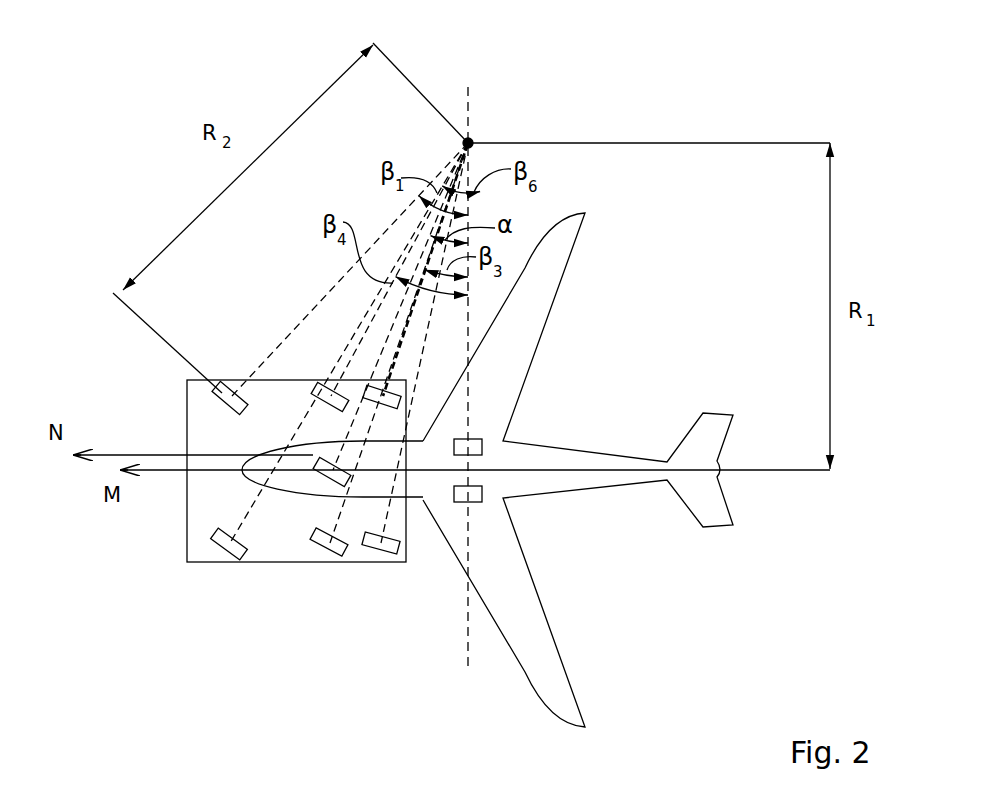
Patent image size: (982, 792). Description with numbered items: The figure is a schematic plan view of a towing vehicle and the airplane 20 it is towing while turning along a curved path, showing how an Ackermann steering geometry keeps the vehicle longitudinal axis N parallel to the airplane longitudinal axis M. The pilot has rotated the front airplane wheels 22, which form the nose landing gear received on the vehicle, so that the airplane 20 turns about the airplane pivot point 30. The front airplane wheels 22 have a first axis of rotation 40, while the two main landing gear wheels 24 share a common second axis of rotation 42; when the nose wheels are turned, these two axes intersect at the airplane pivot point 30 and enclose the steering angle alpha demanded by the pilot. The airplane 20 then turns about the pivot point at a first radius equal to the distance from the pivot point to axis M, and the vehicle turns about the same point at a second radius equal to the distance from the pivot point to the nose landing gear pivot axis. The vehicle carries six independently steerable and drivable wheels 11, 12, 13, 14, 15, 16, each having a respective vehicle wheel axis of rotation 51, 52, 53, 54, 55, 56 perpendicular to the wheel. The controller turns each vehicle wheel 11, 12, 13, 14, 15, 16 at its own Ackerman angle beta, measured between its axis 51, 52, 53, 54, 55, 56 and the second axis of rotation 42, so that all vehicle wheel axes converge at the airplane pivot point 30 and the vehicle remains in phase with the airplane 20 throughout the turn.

The vehicle wheel 11 is at (212, 388).
The vehicle wheel 12 is at (312, 386).
The vehicle wheel 13 is at (400, 402).
The vehicle wheel 14 is at (222, 553).
The vehicle wheel 15 is at (320, 555).
The vehicle wheel 16 is at (390, 553).
The airplane 20 is at (563, 445).
The front airplane wheels 22 is at (318, 485).
The main landing gear wheels 24 is at (484, 500).
The airplane pivot point 30 is at (470, 141).
The first axis of rotation 40 is at (347, 432).
The second axis of rotation 42 is at (470, 377).
The vehicle wheel axis of rotation 51 is at (287, 338).
The vehicle wheel axis of rotation 52 is at (353, 338).
The vehicle wheel axis of rotation 53 is at (397, 348).
The vehicle wheel axis of rotation 54 is at (240, 517).
The vehicle wheel axis of rotation 55 is at (337, 517).
The vehicle wheel axis of rotation 56 is at (387, 518).